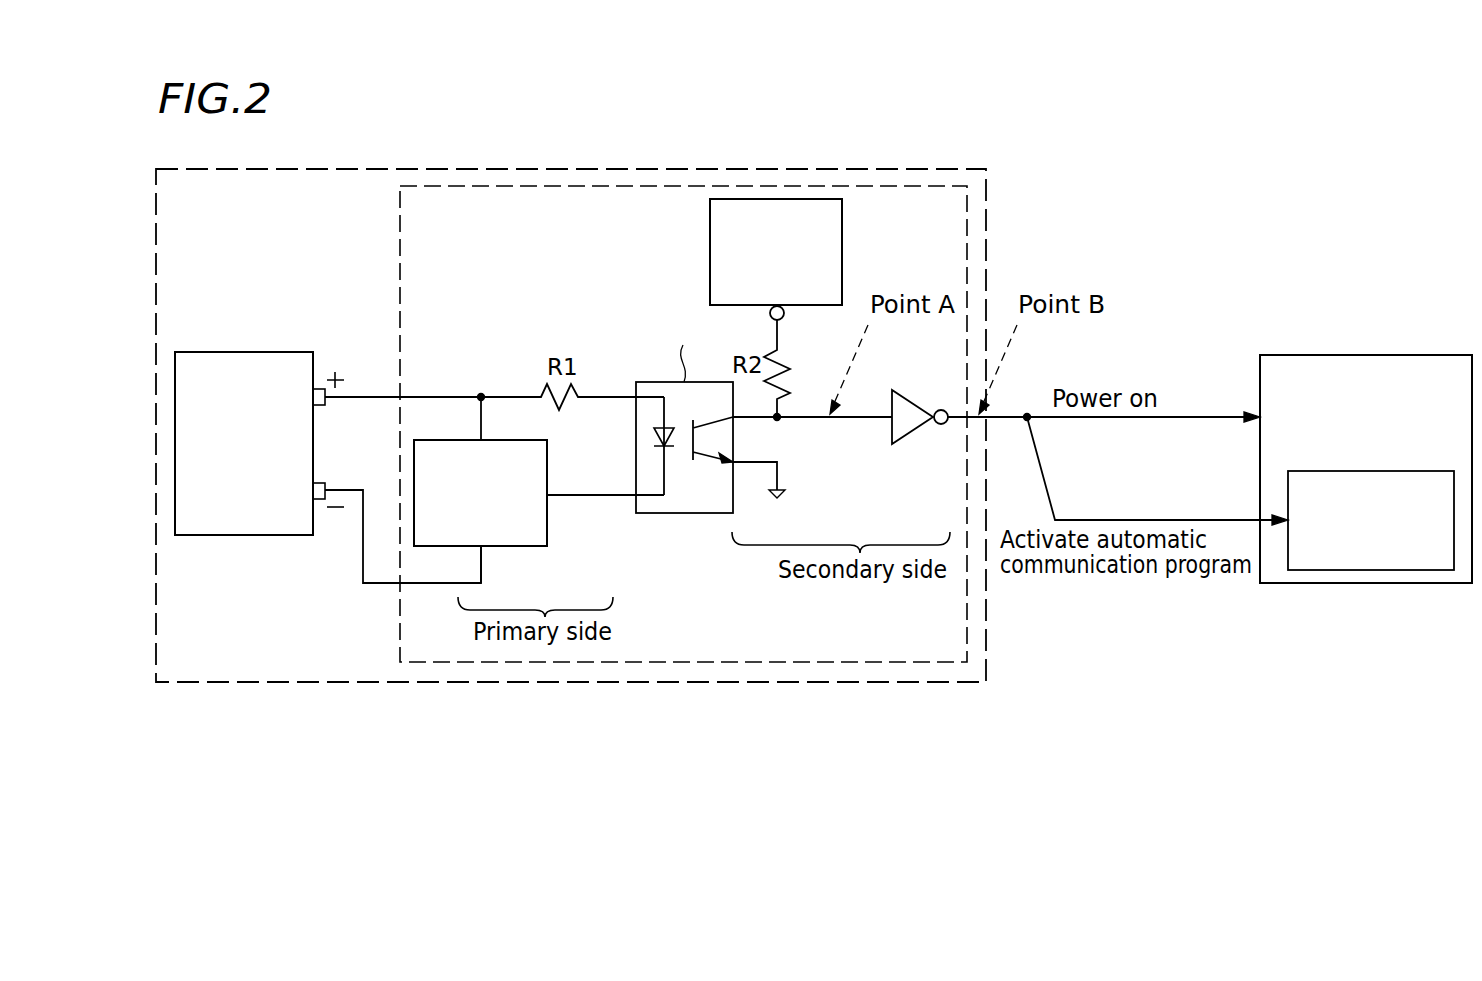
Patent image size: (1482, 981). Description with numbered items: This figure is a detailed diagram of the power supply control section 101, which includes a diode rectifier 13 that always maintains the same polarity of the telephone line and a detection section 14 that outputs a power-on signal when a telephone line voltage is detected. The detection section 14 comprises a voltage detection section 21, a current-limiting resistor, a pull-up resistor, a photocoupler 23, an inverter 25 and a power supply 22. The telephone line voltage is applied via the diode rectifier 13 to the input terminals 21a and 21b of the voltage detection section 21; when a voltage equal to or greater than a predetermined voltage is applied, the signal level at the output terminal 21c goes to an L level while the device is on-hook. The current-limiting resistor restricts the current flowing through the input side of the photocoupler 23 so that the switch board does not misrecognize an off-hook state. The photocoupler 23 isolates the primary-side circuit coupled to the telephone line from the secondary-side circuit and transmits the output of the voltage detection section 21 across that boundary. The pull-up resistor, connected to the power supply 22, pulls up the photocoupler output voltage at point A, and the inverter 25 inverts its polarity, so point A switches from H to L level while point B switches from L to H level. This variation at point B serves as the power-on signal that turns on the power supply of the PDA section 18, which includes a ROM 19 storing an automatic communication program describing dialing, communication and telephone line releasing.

The power supply control section 101 is at (877, 169).
The detection section 14 is at (578, 186).
The diode rectifier 13 is at (233, 351).
The voltage detection section 21 is at (532, 547).
The input terminal 21a is at (475, 437).
The input terminal 21b is at (478, 548).
The output terminal 21c is at (552, 494).
The power supply 22 is at (710, 280).
The photocoupler 23 is at (695, 513).
The inverter 25 is at (913, 432).
The PDA section 18 is at (1368, 355).
The ROM 19 is at (1362, 571).